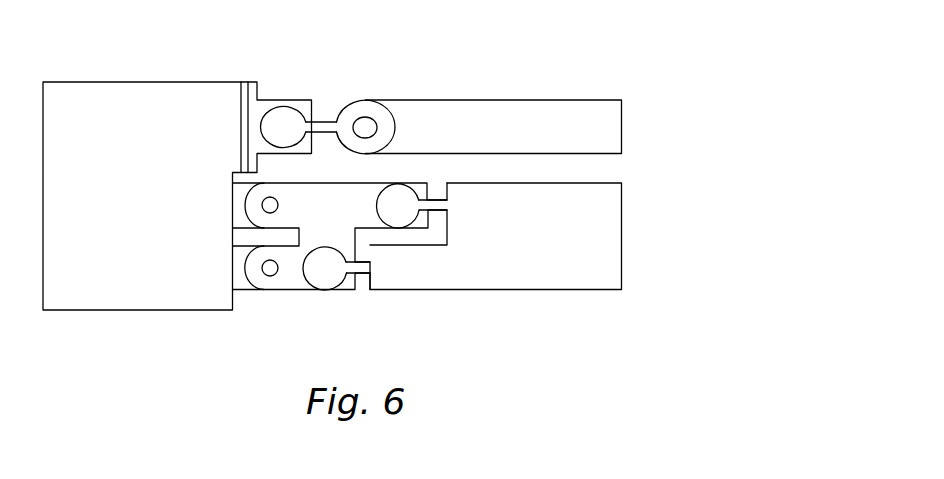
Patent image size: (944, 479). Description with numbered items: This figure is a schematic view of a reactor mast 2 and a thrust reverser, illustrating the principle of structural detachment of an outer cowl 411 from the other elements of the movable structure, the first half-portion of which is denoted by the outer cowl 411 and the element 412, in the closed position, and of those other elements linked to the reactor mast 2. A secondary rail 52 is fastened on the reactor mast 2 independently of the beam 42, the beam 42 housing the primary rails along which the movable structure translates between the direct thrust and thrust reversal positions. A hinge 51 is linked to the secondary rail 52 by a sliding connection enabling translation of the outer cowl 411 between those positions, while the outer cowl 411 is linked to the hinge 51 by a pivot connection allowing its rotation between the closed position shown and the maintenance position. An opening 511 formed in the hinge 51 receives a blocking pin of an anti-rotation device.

The reactor mast 2 is at (130, 102).
The secondary rail 52 is at (270, 98).
The hinge 51 is at (327, 130).
The opening 511 is at (363, 130).
The outer cowl 411 is at (555, 115).
The first half-portion of the movable structure 412 is at (560, 265).
The beam 42 is at (300, 292).